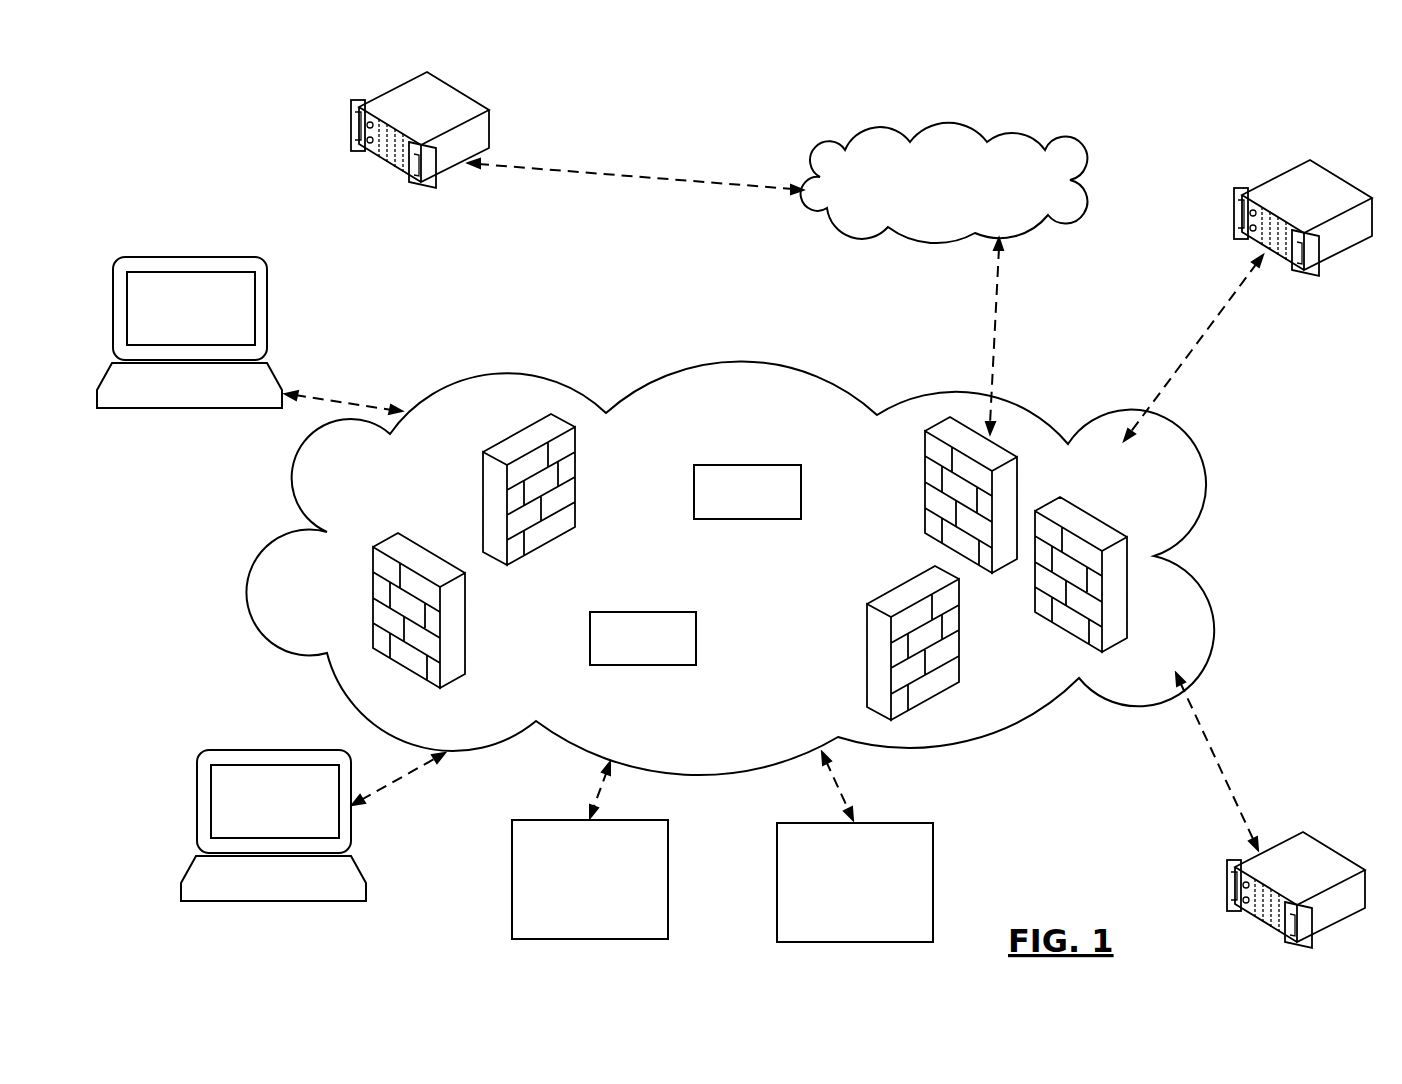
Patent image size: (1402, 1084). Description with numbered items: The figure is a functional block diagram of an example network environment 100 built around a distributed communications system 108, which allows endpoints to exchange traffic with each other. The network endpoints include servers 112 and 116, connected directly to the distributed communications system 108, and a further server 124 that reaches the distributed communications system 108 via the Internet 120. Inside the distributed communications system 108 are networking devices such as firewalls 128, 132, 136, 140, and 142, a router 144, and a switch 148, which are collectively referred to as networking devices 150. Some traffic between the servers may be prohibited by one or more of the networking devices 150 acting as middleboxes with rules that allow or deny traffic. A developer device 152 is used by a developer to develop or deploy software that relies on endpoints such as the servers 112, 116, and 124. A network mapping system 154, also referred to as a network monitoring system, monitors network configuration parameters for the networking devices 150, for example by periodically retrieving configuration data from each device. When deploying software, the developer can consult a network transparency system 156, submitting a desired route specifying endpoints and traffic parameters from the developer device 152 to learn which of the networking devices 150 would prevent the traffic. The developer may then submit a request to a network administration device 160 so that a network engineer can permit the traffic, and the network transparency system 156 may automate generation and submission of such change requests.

The network environment 100 is at (258, 80).
The distributed communications system 108 is at (672, 362).
The server 112 is at (1333, 847).
The server 116 is at (1327, 262).
The Internet 120 is at (965, 128).
The server 124 is at (473, 102).
The firewall 128 is at (1117, 530).
The firewall 132 is at (481, 485).
The firewall 136 is at (884, 592).
The firewall 140 is at (923, 497).
The firewall 142 is at (372, 607).
The router 144 is at (697, 620).
The switch 148 is at (802, 483).
The networking devices 150 is at (983, 714).
The developer device 152 is at (245, 748).
The network mapping system 154 is at (511, 860).
The network transparency system 156 is at (776, 846).
The network administration device 160 is at (165, 255).